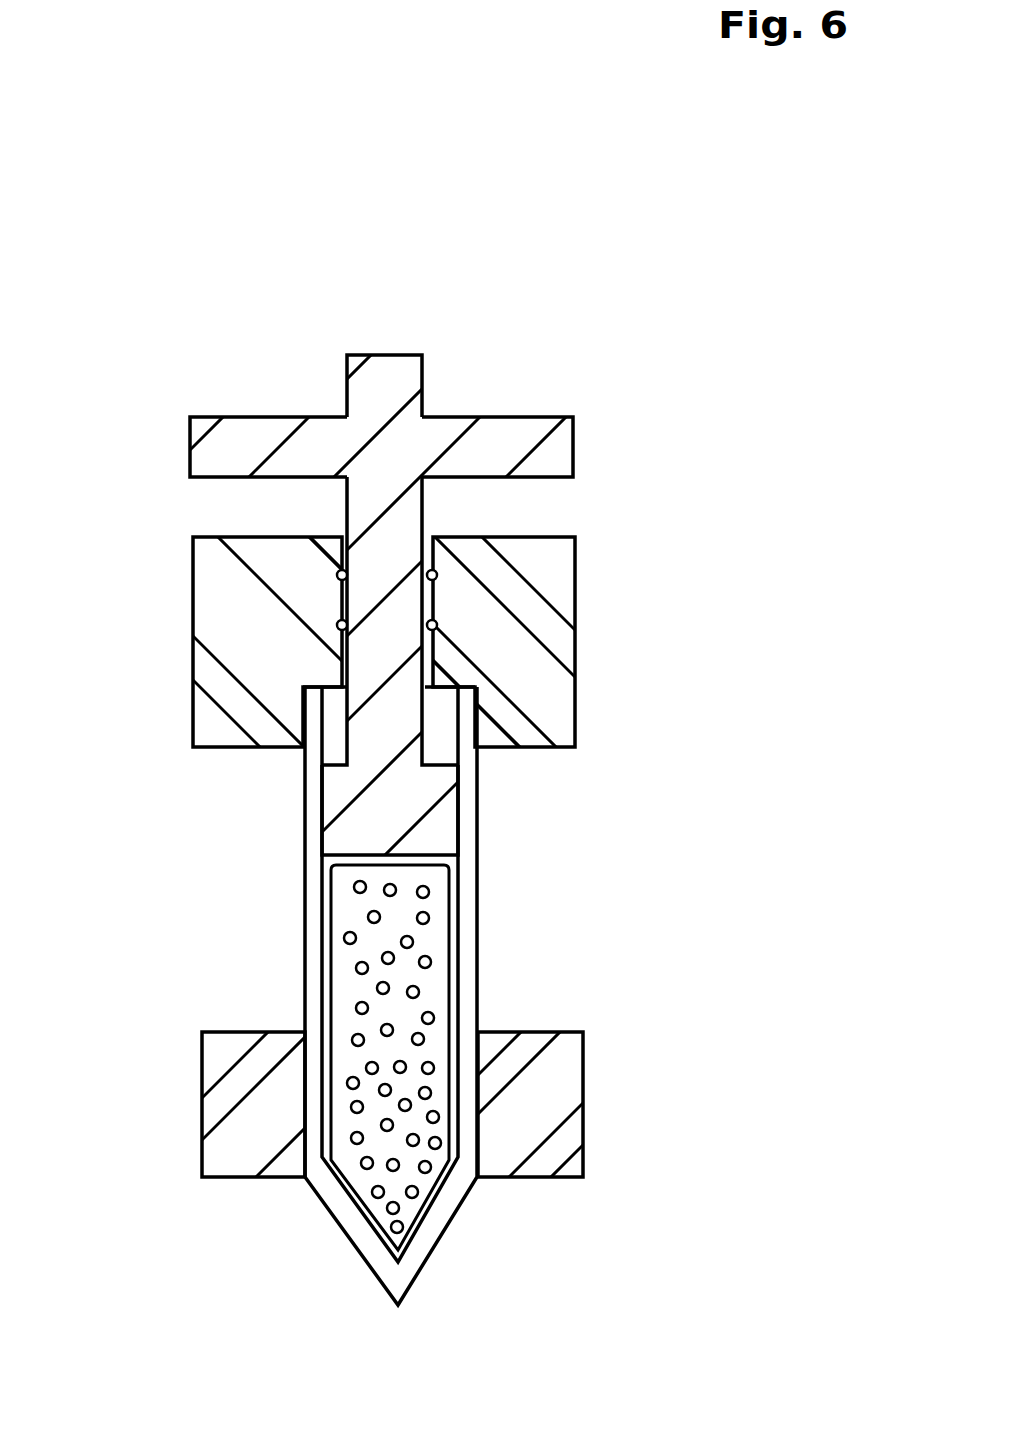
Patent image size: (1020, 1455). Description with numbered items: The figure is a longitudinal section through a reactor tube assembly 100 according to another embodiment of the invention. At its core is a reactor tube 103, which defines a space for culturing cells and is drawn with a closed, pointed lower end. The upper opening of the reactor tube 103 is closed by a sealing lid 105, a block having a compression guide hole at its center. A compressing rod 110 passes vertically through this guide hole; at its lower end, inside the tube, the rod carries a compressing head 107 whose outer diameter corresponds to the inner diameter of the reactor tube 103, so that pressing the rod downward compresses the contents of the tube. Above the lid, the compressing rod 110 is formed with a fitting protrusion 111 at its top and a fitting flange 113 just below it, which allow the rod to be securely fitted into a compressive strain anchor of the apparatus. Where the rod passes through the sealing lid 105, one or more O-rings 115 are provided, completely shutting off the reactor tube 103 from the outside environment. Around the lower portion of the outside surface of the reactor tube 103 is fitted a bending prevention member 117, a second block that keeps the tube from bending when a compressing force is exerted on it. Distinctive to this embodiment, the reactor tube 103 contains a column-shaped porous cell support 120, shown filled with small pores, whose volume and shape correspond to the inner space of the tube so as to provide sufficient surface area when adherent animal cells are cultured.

The reactor tube assembly 100 is at (692, 351).
The reactor tube 103 is at (480, 816).
The sealing lid 105 is at (540, 623).
The compressing head 107 is at (413, 832).
The compressing rod 110 is at (402, 545).
The fitting protrusion 111 is at (400, 368).
The fitting flange 113 is at (240, 447).
The O-rings 115 is at (336, 619).
The bending prevention member 117 is at (553, 1083).
The porous cell support 120 is at (403, 1143).